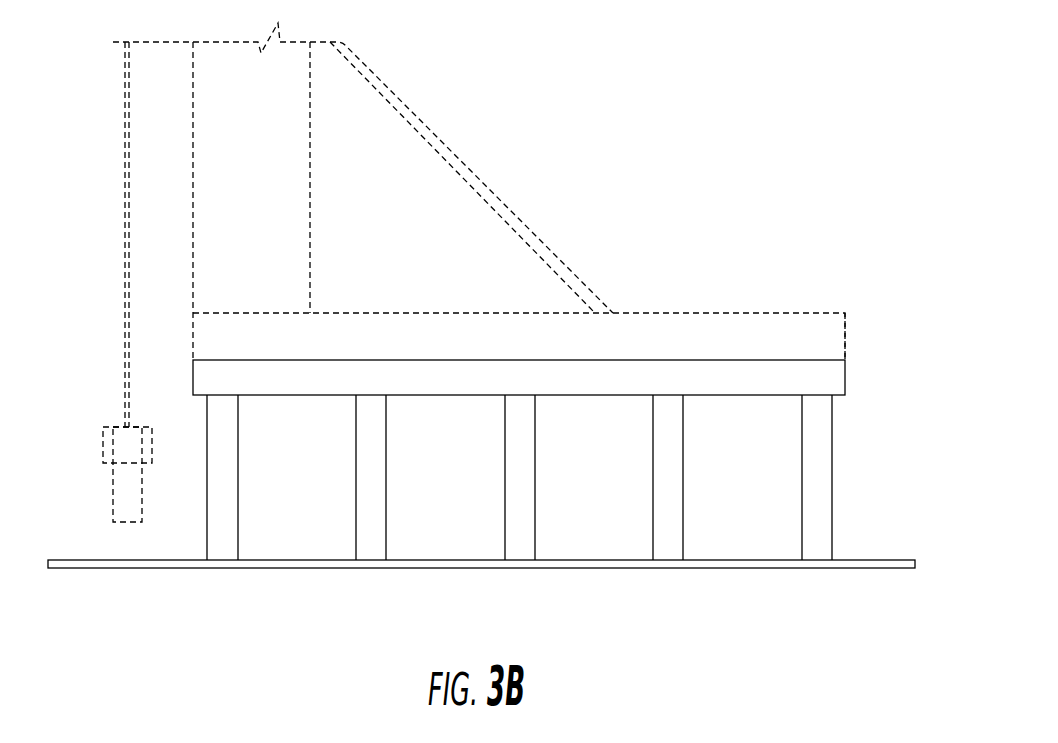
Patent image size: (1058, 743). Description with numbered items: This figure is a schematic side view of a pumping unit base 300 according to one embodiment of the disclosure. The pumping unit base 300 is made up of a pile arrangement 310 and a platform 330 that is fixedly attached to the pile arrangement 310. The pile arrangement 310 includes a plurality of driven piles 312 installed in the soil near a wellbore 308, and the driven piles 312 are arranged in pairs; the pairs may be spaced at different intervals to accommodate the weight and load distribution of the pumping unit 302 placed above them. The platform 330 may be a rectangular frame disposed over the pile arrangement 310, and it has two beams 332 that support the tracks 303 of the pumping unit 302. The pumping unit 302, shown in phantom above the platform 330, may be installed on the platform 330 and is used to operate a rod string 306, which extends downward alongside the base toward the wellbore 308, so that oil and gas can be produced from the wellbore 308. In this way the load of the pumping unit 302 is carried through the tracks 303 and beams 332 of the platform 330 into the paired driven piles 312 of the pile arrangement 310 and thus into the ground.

The pumping unit base 300 is at (548, 354).
The pumping unit 302 is at (252, 222).
The tracks 303 is at (815, 327).
The rod string 306 is at (127, 260).
The wellbore 308 is at (100, 473).
The pile arrangement 310 is at (607, 580).
The driven piles 312 is at (808, 476).
The platform 330 is at (849, 335).
The beams 332 is at (830, 376).